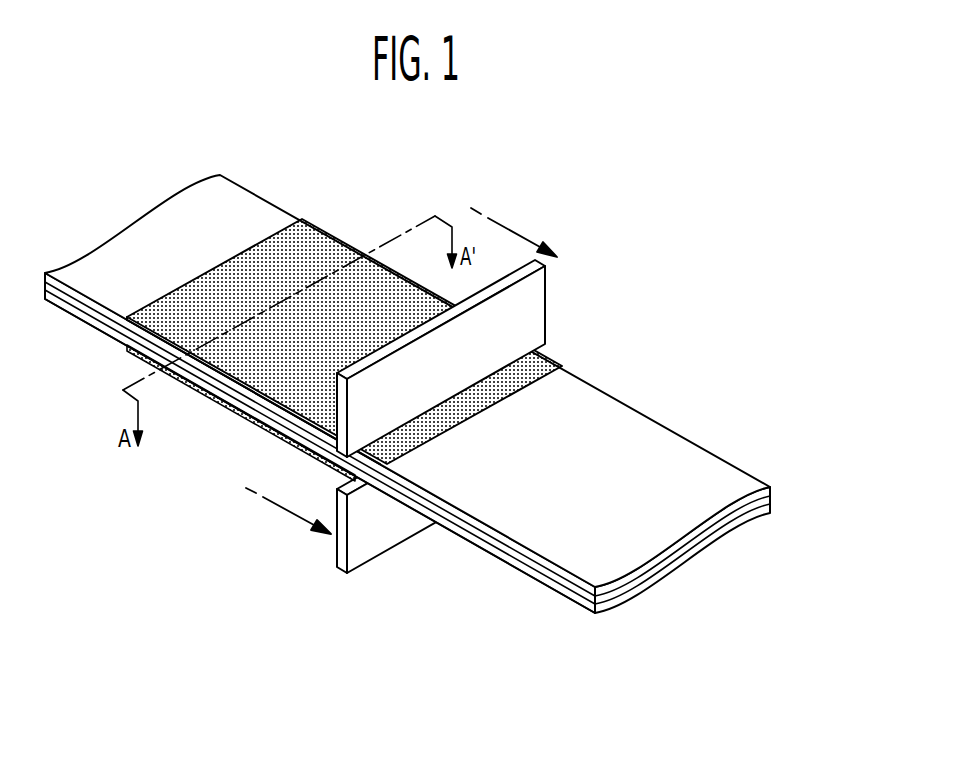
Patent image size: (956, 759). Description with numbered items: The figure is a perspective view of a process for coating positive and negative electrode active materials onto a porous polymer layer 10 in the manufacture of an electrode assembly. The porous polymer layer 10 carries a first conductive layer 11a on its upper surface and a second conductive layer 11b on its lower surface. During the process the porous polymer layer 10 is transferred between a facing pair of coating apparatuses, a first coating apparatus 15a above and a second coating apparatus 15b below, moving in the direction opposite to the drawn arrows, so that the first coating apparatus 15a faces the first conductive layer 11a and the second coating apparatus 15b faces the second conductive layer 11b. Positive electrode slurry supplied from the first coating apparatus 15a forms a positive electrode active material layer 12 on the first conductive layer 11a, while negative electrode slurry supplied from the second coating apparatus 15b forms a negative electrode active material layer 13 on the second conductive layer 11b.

The porous polymer layer 10 is at (419, 429).
The first conductive layer 11a is at (650, 427).
The second conductive layer 11b is at (553, 590).
The positive electrode active material layer 12 is at (317, 245).
The negative electrode active material layer 13 is at (197, 388).
The first coating apparatus 15a is at (535, 307).
The second coating apparatus 15b is at (358, 553).